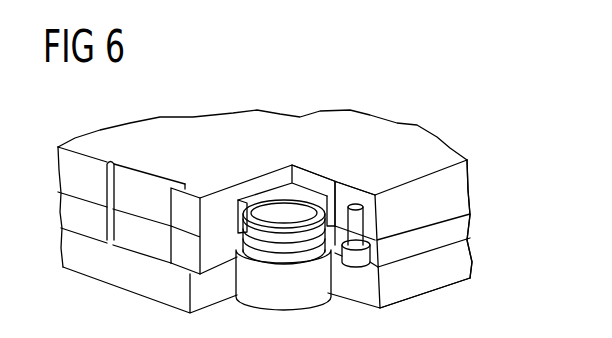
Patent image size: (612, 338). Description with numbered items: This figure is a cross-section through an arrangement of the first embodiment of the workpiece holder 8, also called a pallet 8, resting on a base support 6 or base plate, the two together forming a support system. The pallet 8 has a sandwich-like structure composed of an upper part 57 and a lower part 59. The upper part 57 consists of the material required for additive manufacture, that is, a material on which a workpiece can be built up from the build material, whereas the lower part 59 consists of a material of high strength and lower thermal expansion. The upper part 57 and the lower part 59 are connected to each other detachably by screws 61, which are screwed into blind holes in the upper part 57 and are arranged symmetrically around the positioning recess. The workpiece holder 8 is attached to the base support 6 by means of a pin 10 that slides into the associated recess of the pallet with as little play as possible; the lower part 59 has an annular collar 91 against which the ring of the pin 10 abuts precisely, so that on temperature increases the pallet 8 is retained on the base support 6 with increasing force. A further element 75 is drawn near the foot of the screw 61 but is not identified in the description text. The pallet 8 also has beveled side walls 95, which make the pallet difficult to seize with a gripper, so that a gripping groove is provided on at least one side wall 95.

The base support 6 is at (458, 255).
The workpiece holder 8 is at (92, 146).
The pin 10 is at (302, 287).
The upper part 57 is at (208, 133).
The lower part 59 is at (455, 230).
The screw 61 is at (357, 222).
The pin base 75 is at (372, 258).
The annular collar 91 is at (337, 182).
The beveled side wall 95 is at (182, 247).